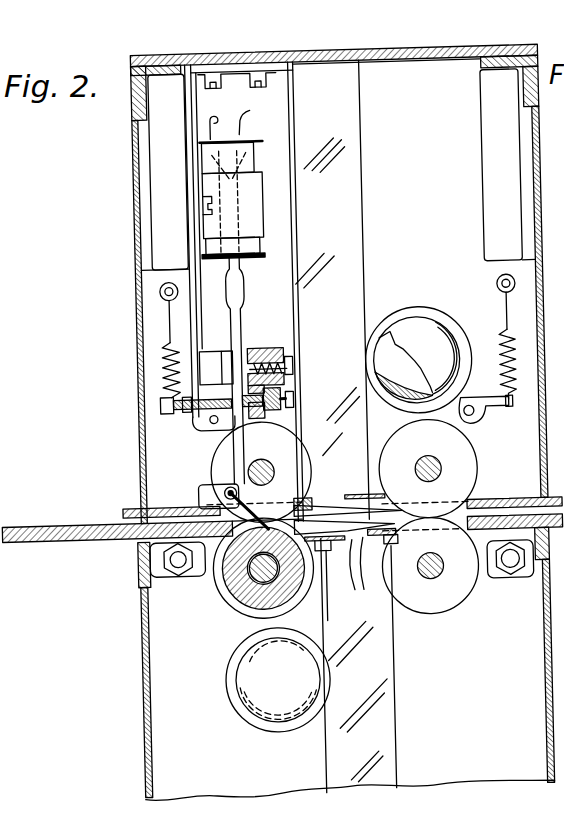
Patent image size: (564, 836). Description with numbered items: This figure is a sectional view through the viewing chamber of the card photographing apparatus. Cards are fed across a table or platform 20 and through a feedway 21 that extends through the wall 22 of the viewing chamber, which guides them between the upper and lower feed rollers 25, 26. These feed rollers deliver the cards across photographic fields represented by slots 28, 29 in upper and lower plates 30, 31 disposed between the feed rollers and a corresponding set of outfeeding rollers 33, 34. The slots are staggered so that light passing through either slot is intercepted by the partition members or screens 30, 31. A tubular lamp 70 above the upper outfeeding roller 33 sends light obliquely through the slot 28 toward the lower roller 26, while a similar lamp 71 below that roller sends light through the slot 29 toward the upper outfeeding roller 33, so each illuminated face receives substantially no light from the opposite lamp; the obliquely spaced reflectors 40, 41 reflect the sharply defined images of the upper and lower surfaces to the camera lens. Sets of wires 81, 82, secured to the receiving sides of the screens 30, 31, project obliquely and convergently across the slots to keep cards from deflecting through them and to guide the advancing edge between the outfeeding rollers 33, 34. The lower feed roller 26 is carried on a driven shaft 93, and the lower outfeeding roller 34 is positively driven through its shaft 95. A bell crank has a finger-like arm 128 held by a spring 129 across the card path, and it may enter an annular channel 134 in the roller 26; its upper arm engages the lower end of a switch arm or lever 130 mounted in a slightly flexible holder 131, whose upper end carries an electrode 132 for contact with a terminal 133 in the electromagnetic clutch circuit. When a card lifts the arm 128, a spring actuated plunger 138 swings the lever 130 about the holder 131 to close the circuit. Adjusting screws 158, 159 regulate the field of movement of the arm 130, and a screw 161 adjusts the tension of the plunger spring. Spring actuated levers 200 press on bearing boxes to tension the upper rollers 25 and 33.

The table or platform 20 is at (282, 515).
The feedway 21 is at (156, 537).
The wall 22 is at (139, 495).
The upper feed roller 25 is at (261, 472).
The lower feed roller 26 is at (236, 582).
The upper slot 28 is at (322, 495).
The lower slot 29 is at (350, 556).
The upper plate 30 is at (340, 503).
The lower plate 31 is at (380, 556).
The upper outfeeding roller 33 is at (428, 468).
The lower outfeeding roller 34 is at (436, 570).
The reflector 40 is at (360, 259).
The reflector 41 is at (373, 713).
The tubular lamp 70 is at (392, 368).
The lamp 71 is at (230, 683).
The wires 81 is at (320, 470).
The wires 82 is at (335, 578).
The shaft 93 is at (235, 603).
The shaft 95 is at (439, 572).
The finger-like arm 128 is at (270, 515).
The spring 129 is at (223, 488).
The switch arm or lever 130 is at (239, 321).
The flexible holder 131 is at (247, 221).
The electrode 132 is at (248, 171).
The terminal 133 is at (263, 160).
The annular channel 134 is at (217, 588).
The spring actuated plunger 138 is at (265, 346).
The adjusting screw 158 is at (212, 430).
The adjusting screw 159 is at (290, 407).
The screw 161 is at (295, 369).
The spring actuated lever 200 is at (487, 358).